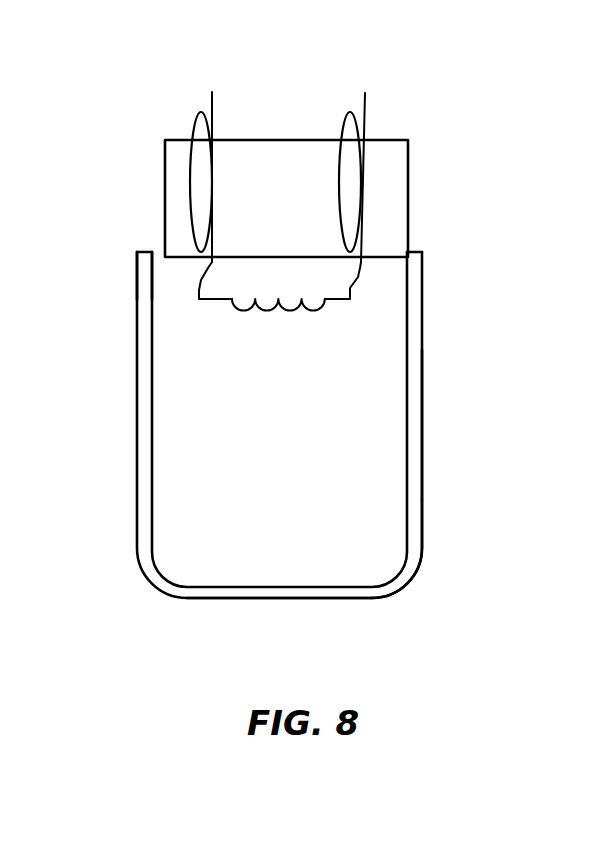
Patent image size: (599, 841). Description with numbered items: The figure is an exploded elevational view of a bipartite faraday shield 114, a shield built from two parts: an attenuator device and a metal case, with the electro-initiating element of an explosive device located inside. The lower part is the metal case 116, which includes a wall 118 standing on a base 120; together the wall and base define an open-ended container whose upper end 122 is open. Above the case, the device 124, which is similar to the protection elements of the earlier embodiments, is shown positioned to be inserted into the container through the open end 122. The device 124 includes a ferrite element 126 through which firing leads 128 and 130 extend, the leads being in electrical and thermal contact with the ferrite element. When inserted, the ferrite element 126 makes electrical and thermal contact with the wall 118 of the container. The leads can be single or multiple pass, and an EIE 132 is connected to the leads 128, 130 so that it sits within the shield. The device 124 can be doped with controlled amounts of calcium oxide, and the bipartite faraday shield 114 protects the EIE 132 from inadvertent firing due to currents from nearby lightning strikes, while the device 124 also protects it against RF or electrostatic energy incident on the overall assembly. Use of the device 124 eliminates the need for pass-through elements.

The bipartite faraday shield 114 is at (465, 334).
The metal case 116 is at (424, 481).
The wall 118 is at (421, 533).
The base 120 is at (272, 599).
The open end 122 is at (160, 252).
The device 124 is at (265, 178).
The ferrite element 126 is at (390, 183).
The firing lead 128 is at (214, 110).
The firing lead 130 is at (367, 110).
The EIE 132 is at (246, 310).